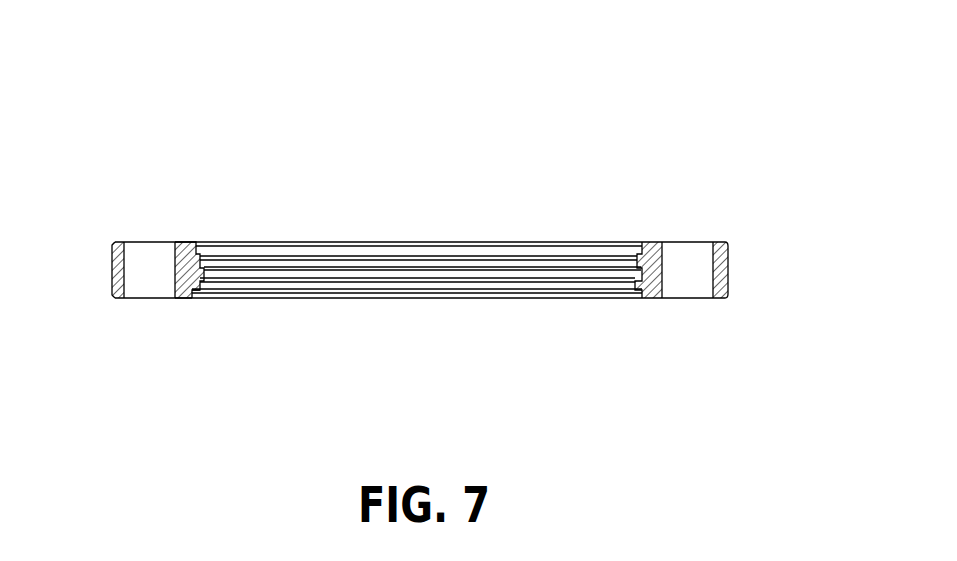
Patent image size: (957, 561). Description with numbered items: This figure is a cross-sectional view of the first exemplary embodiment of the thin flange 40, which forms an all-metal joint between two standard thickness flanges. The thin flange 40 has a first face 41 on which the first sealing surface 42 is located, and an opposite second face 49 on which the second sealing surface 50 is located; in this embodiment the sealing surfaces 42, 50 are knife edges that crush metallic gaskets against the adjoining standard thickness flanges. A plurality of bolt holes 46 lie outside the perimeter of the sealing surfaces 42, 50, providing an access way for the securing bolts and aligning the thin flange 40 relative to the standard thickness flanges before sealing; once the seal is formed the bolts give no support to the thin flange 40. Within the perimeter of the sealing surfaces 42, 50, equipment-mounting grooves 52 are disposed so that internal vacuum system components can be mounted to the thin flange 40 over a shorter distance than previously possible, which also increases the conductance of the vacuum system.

The thin flange 40 is at (467, 219).
The first face 41 is at (178, 240).
The first sealing surface 42 is at (197, 243).
The bolt holes 46 is at (147, 240).
The second face 49 is at (178, 299).
The second sealing surface 50 is at (190, 299).
The equipment-mounting grooves 52 is at (648, 250).